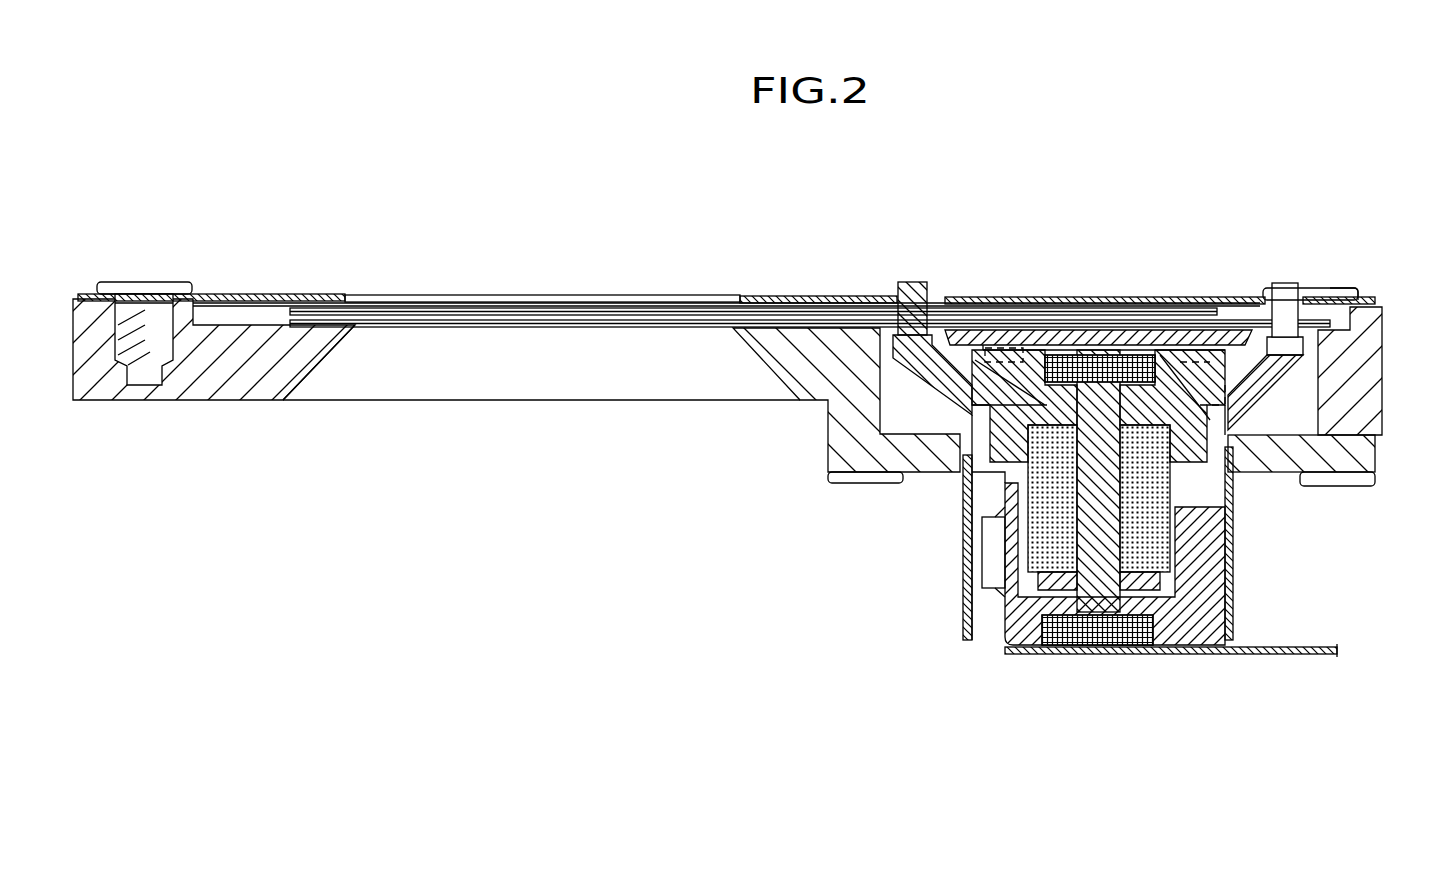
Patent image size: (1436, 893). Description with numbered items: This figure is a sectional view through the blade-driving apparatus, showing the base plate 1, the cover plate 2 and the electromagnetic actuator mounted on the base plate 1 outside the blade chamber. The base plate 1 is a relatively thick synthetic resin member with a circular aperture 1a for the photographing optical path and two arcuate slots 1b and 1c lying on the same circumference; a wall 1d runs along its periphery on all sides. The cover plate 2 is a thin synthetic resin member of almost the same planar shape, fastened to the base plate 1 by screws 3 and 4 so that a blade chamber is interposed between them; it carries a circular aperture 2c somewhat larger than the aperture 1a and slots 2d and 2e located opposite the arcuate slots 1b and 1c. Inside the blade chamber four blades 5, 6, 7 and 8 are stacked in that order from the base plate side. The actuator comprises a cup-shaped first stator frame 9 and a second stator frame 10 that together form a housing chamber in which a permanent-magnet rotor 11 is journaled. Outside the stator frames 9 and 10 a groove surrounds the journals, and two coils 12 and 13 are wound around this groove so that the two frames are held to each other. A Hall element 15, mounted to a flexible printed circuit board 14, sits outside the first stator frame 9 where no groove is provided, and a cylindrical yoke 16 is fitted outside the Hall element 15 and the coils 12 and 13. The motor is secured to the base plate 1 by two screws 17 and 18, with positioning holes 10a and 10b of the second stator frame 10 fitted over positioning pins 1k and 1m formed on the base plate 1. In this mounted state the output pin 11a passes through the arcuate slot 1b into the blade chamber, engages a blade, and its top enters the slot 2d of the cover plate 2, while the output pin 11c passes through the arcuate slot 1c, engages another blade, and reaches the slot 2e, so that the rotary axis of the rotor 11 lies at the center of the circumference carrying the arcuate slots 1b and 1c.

The base plate 1 is at (220, 387).
The circular aperture 1a is at (380, 328).
The arcuate slot 1b is at (1258, 335).
The arcuate slot 1c is at (940, 333).
The wall 1d is at (1372, 325).
The positioning pin 1k is at (1027, 352).
The positioning pin 1m is at (1198, 362).
The cover plate 2 is at (227, 293).
The circular aperture 2c is at (385, 293).
The slot 2d is at (1303, 300).
The slot 2e is at (895, 300).
The screw 3 is at (145, 285).
The screw 4 is at (1350, 292).
The blade 5 is at (1318, 298).
The blade 6 is at (1132, 327).
The blade 7 is at (417, 313).
The blade 8 is at (258, 307).
The first stator frame 9 is at (1212, 655).
The second stator frame 10 is at (1288, 462).
The positioning hole 10a is at (1001, 352).
The positioning hole 10b is at (1175, 362).
The rotor 11 is at (1155, 550).
The output pin 11a is at (1286, 283).
The output pin 11c is at (913, 283).
The coil 12 is at (1118, 655).
The coil 13 is at (1112, 700).
The flexible printed circuit board 14 is at (1290, 657).
The Hall element 15 is at (987, 552).
The cylindrical yoke 16 is at (966, 628).
The screw 17 is at (873, 476).
The screw 18 is at (1325, 475).